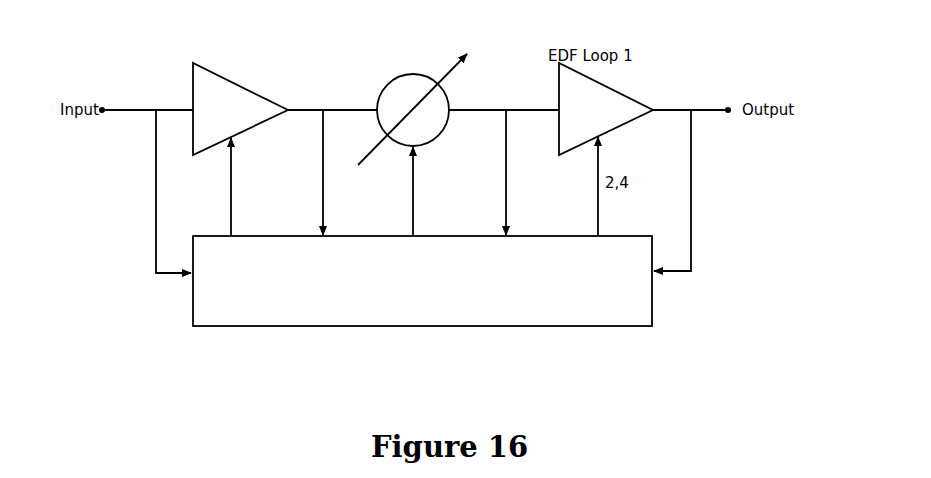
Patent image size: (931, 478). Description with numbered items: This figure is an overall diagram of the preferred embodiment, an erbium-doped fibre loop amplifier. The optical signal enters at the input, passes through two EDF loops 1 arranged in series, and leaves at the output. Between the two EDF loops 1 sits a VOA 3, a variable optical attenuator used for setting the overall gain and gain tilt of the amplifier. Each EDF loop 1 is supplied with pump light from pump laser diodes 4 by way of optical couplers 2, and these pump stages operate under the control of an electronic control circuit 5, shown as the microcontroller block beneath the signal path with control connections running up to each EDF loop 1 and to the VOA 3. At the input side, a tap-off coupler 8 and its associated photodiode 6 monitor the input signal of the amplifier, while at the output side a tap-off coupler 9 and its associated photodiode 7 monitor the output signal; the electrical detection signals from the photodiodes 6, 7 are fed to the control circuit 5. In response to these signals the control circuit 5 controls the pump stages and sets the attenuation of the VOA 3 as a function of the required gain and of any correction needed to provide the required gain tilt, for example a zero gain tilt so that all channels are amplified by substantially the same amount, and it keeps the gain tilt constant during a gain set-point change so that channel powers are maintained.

The EDF loop 1 is at (238, 101).
The optical coupler 2 is at (244, 187).
The pump laser diode 4 is at (244, 187).
The VOA 3 is at (412, 107).
The electronic control circuit 5 is at (422, 281).
The photodiode 6 is at (161, 191).
The tap-off coupler 8 is at (161, 191).
The photodiode 7 is at (687, 190).
The tap-off coupler 9 is at (687, 190).